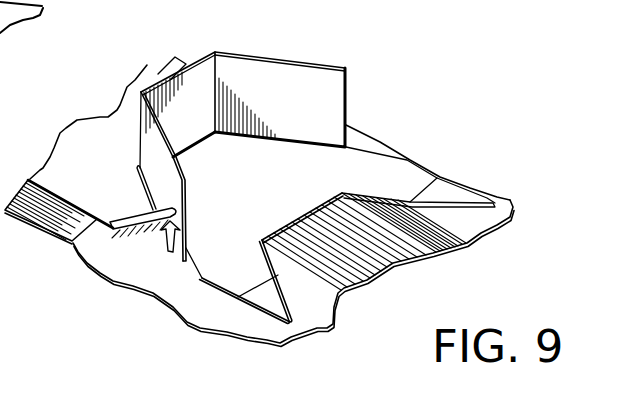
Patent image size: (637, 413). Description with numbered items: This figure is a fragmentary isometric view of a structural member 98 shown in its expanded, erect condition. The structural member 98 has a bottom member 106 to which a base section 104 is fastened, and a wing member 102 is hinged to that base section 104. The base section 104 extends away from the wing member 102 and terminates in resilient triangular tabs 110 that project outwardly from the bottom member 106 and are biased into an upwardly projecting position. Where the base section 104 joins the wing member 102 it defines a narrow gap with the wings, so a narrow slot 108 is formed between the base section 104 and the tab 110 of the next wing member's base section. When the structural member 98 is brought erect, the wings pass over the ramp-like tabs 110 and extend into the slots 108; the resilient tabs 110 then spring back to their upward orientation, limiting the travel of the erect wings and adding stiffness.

The structural member 98 is at (426, 109).
The wing member 102 is at (147, 70).
The base section 104 is at (68, 242).
The bottom member 106 is at (482, 241).
The narrow slot 108 is at (143, 186).
The resilient triangular tab 110 is at (185, 228).